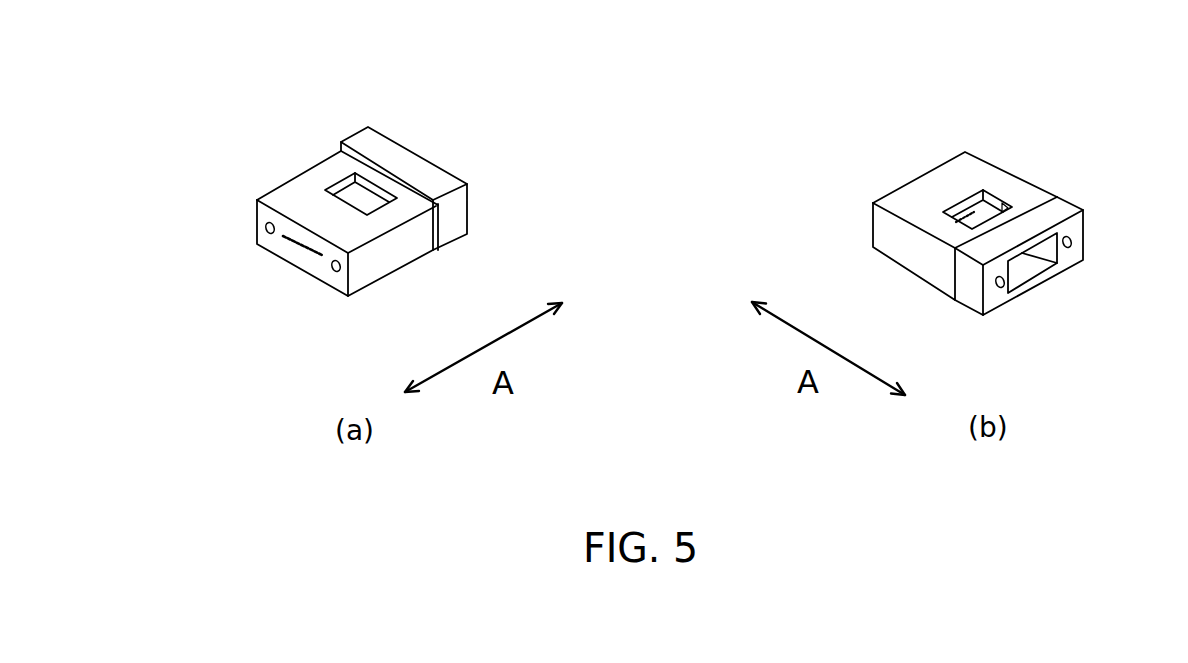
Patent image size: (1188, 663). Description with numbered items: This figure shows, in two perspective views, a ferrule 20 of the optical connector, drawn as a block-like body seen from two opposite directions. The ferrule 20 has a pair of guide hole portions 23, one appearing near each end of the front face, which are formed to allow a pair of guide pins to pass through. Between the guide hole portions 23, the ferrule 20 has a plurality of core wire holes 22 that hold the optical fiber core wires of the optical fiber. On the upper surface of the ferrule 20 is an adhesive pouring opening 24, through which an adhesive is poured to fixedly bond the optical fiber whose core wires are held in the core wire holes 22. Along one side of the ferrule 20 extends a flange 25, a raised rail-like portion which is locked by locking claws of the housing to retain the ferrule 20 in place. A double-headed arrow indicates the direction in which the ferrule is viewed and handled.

The ferrule 20 is at (470, 255).
The core wire holes 22 is at (285, 244).
The guide hole portions 23 is at (266, 224).
The adhesive pouring opening 24 is at (348, 188).
The flange 25 is at (420, 176).